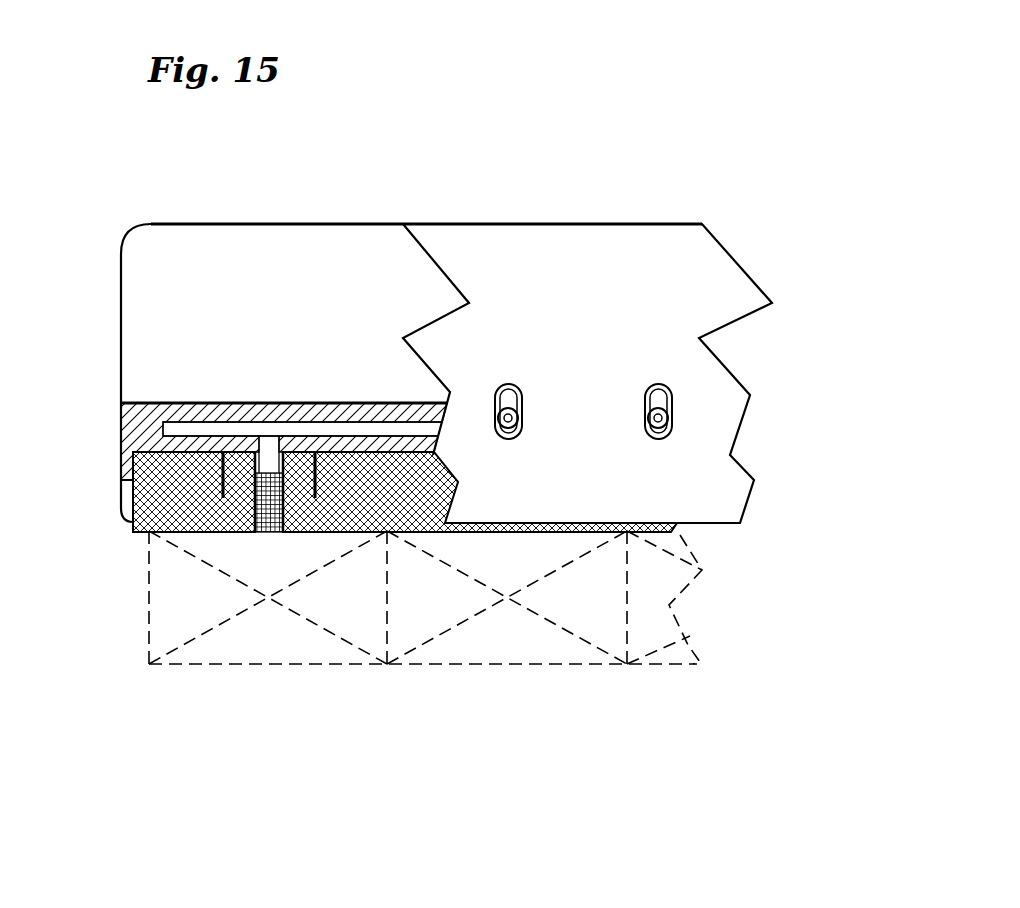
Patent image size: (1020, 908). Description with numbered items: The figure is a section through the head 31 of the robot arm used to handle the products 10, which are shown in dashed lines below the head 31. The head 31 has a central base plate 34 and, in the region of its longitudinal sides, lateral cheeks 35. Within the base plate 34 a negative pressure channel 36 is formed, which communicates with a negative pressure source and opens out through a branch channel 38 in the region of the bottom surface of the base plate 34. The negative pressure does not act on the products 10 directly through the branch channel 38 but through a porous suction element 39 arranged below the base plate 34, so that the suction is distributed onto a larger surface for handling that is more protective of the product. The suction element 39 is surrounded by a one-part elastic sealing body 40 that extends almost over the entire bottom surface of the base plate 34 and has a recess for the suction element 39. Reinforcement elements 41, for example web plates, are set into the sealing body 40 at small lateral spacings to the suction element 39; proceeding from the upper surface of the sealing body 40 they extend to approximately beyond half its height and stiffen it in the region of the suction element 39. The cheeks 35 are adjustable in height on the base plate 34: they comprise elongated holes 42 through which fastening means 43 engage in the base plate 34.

The product 10 is at (512, 642).
The head 31 is at (752, 218).
The base plate 34 is at (143, 435).
The cheek 35 is at (323, 267).
The negative pressure channel 36 is at (210, 430).
The branch channel 38 is at (270, 462).
The porous suction element 39 is at (267, 531).
The elastic sealing body 40 is at (172, 502).
The reinforcement element 41 is at (217, 482).
The elongated hole 42 is at (652, 383).
The fastening means 43 is at (647, 428).